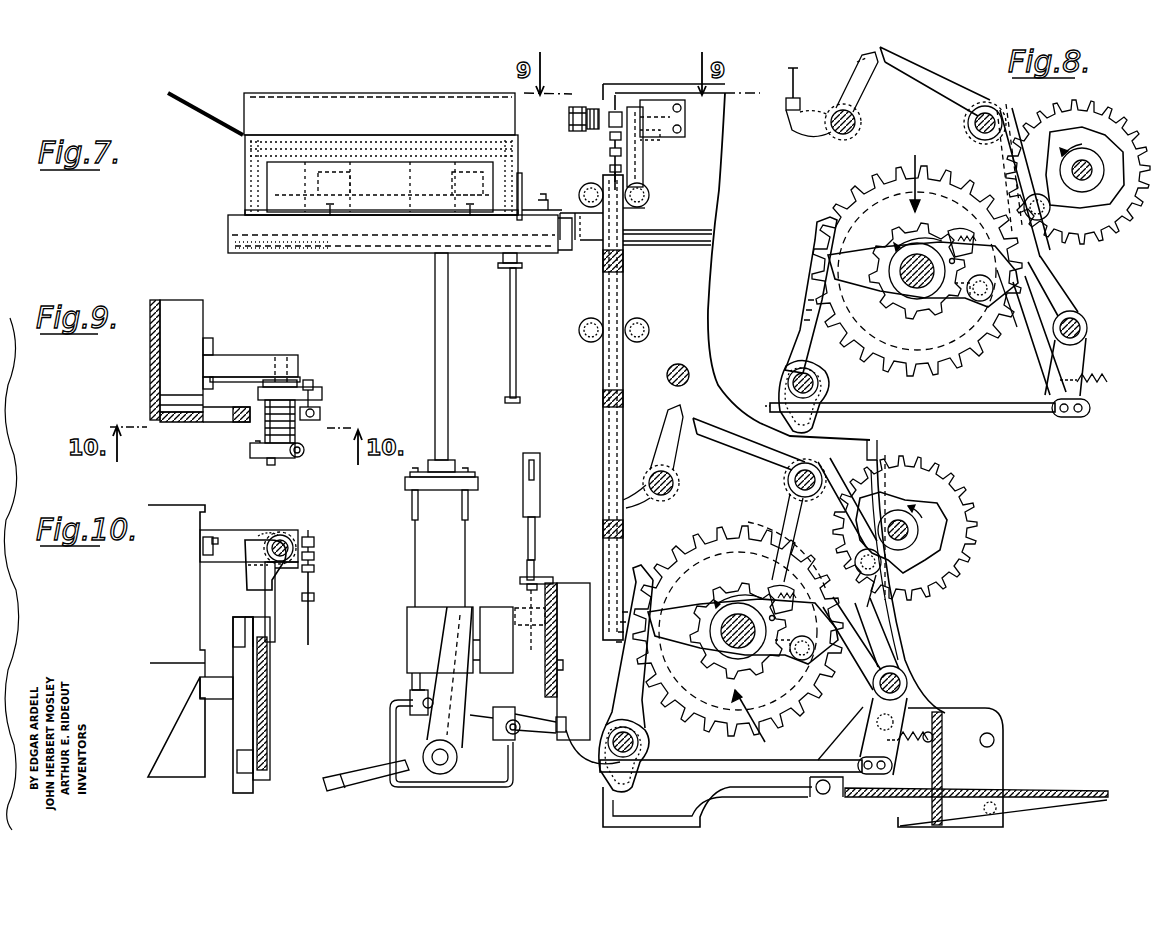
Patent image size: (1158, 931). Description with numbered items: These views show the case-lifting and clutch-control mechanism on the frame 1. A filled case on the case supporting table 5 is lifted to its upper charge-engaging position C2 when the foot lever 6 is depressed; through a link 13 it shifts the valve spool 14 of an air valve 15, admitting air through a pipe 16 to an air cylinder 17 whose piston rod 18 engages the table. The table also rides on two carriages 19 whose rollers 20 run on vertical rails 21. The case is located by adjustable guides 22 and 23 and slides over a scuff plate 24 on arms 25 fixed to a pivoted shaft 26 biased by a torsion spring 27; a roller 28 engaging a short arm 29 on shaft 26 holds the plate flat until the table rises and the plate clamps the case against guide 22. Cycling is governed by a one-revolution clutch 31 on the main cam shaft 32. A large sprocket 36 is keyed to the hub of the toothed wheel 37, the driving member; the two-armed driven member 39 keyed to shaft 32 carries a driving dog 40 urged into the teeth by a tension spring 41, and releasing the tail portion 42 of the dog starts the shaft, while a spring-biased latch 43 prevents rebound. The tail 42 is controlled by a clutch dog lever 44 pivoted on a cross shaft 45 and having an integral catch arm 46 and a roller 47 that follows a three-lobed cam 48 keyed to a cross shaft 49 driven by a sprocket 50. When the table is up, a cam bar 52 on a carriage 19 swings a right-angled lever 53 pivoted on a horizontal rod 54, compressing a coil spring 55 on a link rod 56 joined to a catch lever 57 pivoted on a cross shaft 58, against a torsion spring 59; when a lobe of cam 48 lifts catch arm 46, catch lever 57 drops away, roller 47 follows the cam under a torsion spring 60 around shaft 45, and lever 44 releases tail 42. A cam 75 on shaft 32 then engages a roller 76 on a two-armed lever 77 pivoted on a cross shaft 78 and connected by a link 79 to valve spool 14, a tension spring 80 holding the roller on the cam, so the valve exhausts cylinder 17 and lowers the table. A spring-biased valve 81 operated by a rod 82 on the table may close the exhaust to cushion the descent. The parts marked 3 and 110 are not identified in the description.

In FIG. 7, the frame 1 is at (712, 184).
In FIG. 9, the frame 1 is at (204, 320).
In FIG. 10, the frame 1 is at (158, 578).
In FIG. 7, the charge-engaging position C2 is at (244, 156).
In FIG. 7, the hopper lining 3 is at (245, 176).
In FIG. 7, the case supporting table 5 is at (228, 229).
In FIG. 7, the foot lever 6 is at (340, 777).
In FIG. 7, the link 13 is at (460, 677).
In FIG. 7, the valve spool 14 is at (556, 720).
In FIG. 7, the air valve 15 is at (520, 742).
In FIG. 7, the pipe 16 is at (456, 787).
In FIG. 7, the air cylinder 17 is at (414, 524).
In FIG. 7, the piston rod 18 is at (435, 350).
In FIG. 7, the carriages 19 is at (585, 305).
In FIG. 10, the carriages 19 is at (260, 690).
In FIG. 7, the rollers 20 is at (645, 200).
In FIG. 10, the rollers 20 is at (240, 632).
In FIG. 7, the vertical bars or rails 21 is at (603, 432).
In FIG. 10, the vertical bars or rails 21 is at (236, 724).
In FIG. 7, the adjustable guide 22 is at (402, 192).
In FIG. 7, the adjustable guide 23 is at (526, 200).
In FIG. 7, the scuff plate 24 is at (260, 180).
In FIG. 7, the spaced arms 25 is at (328, 222).
In FIG. 7, the pivoted shaft 26 is at (372, 252).
In FIG. 7, the torsion spring 27 is at (258, 255).
In FIG. 7, the roller 28 is at (524, 453).
In FIG. 7, the short arm 29 is at (520, 272).
In FIG. 7, the one-revolution clutch 31 is at (760, 723).
In FIG. 8, the one-revolution clutch 31 is at (910, 171).
In FIG. 7, the main cam shaft 32 is at (727, 640).
In FIG. 8, the main cam shaft 32 is at (907, 290).
In FIG. 7, the large sprocket 36 is at (738, 613).
In FIG. 8, the large sprocket 36 is at (890, 375).
In FIG. 7, the toothed wheel 37 is at (738, 622).
In FIG. 8, the toothed wheel 37 is at (917, 260).
In FIG. 7, the driven member 39 is at (703, 613).
In FIG. 8, the driven member 39 is at (880, 252).
In FIG. 7, the driving dog 40 is at (772, 588).
In FIG. 8, the driving dog 40 is at (952, 231).
In FIG. 7, the tension spring 41 is at (795, 660).
In FIG. 8, the tension spring 41 is at (975, 303).
In FIG. 7, the tail portion 42 is at (838, 668).
In FIG. 8, the tail portion 42 is at (1012, 310).
In FIG. 7, the spring biased latch 43 is at (656, 575).
In FIG. 8, the spring biased latch 43 is at (815, 234).
In FIG. 7, the clutch dog lever 44 is at (870, 600).
In FIG. 8, the clutch dog lever 44 is at (1030, 248).
In FIG. 7, the cross shaft 45 is at (815, 478).
In FIG. 8, the cross shaft 45 is at (984, 104).
In FIG. 7, the catch arm 46 is at (745, 452).
In FIG. 8, the catch arm 46 is at (938, 78).
In FIG. 7, the roller 47 is at (858, 553).
In FIG. 8, the roller 47 is at (1030, 197).
In FIG. 7, the three-lobed cam 48 is at (908, 568).
In FIG. 8, the three-lobed cam 48 is at (1078, 207).
In FIG. 7, the cross shaft 49 is at (918, 530).
In FIG. 8, the cross shaft 49 is at (1088, 162).
In FIG. 7, the sprocket 50 is at (960, 478).
In FIG. 8, the sprocket 50 is at (1100, 242).
In FIG. 7, the cam bar 52 is at (643, 178).
In FIG. 10, the cam bar 52 is at (265, 600).
In FIG. 7, the right-angled lever 53 is at (645, 150).
In FIG. 9, the right-angled lever 53 is at (278, 378).
In FIG. 10, the right-angled lever 53 is at (247, 580).
In FIG. 7, the horizontal rod 54 is at (569, 122).
In FIG. 9, the horizontal rod 54 is at (282, 460).
In FIG. 10, the horizontal rod 54 is at (283, 534).
In FIG. 7, the coil spring 55 is at (610, 150).
In FIG. 10, the coil spring 55 is at (314, 588).
In FIG. 7, the link rod 56 is at (610, 172).
In FIG. 8, the link rod 56 is at (787, 80).
In FIG. 9, the link rod 56 is at (320, 414).
In FIG. 10, the link rod 56 is at (314, 622).
In FIG. 7, the catch lever 57 is at (672, 428).
In FIG. 8, the catch lever 57 is at (848, 70).
In FIG. 7, the cross shaft 58 is at (664, 497).
In FIG. 8, the cross shaft 58 is at (840, 136).
In FIG. 7, the torsion spring 59 is at (594, 106).
In FIG. 9, the torsion spring 59 is at (295, 428).
In FIG. 10, the torsion spring 59 is at (268, 535).
In FIG. 7, the torsion spring 60 is at (789, 490).
In FIG. 8, the torsion spring 60 is at (1002, 110).
In FIG. 7, the cam 75 is at (787, 544).
In FIG. 7, the roller 76 is at (792, 609).
In FIG. 8, the roller 76 is at (964, 240).
In FIG. 7, the two-armed lever 77 is at (900, 660).
In FIG. 8, the two-armed lever 77 is at (1055, 302).
In FIG. 7, the cross shaft 78 is at (905, 678).
In FIG. 8, the cross shaft 78 is at (1078, 318).
In FIG. 7, the link 79 is at (674, 764).
In FIG. 8, the link 79 is at (980, 404).
In FIG. 7, the tension spring 80 is at (934, 740).
In FIG. 8, the tension spring 80 is at (1104, 376).
In FIG. 7, the spring-biased valve 81 is at (512, 600).
In FIG. 7, the rod 82 is at (510, 333).
In FIG. 7, the pin 110 is at (678, 364).